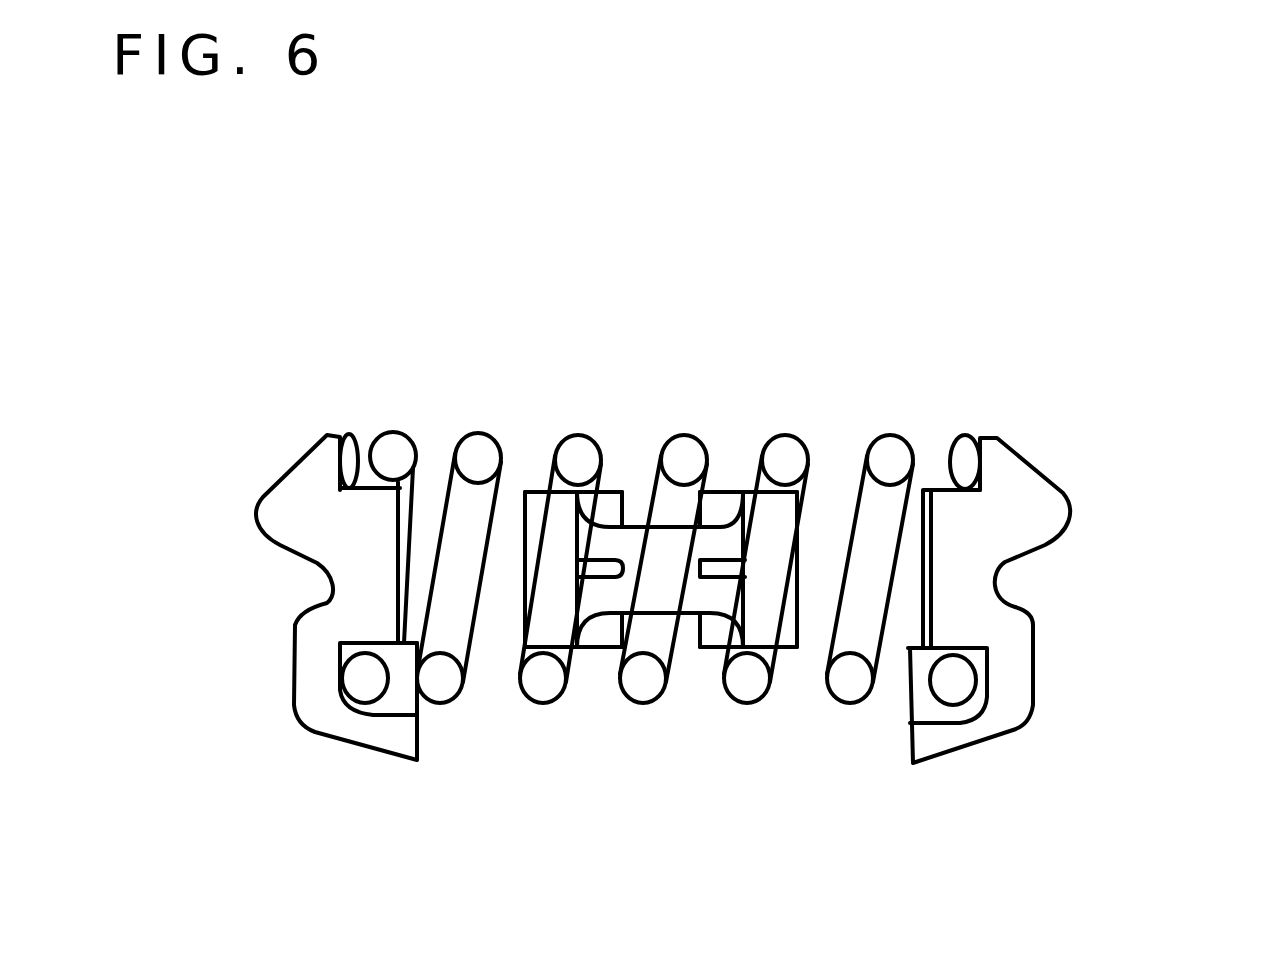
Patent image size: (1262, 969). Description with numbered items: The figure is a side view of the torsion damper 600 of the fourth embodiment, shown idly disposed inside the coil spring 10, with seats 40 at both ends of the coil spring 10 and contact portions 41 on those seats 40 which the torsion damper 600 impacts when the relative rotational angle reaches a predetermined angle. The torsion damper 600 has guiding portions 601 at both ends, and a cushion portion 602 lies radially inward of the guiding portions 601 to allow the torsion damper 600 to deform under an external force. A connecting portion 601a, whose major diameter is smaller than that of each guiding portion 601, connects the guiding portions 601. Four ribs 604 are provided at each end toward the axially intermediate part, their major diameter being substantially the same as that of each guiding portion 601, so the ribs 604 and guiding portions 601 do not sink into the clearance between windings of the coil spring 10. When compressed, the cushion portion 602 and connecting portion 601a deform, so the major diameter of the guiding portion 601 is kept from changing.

The coil spring 10 is at (400, 460).
The seat 40 is at (290, 527).
The contact portion 41 is at (400, 527).
The torsion damper 600 is at (670, 537).
The guiding portion 601 is at (548, 492).
The connecting portion 601a is at (687, 593).
The cushion portion 602 is at (800, 557).
The rib 604 is at (713, 510).